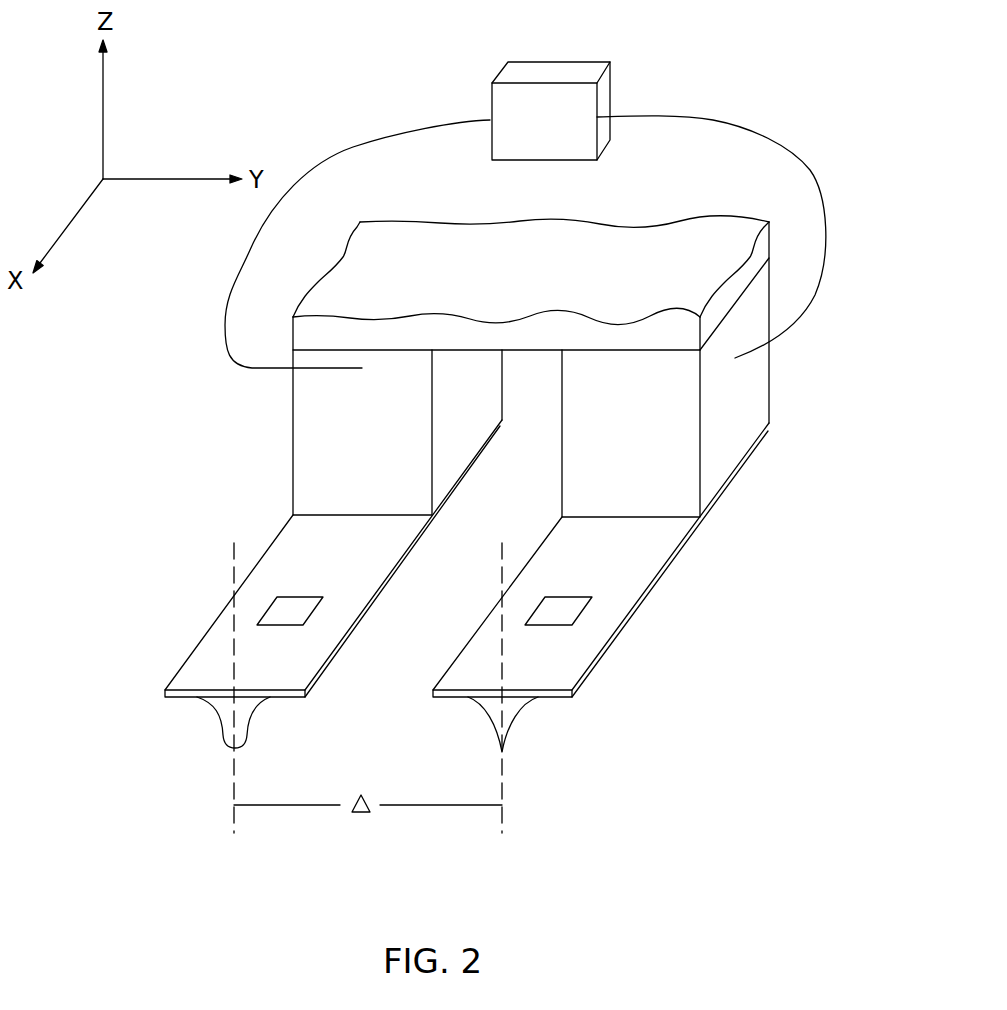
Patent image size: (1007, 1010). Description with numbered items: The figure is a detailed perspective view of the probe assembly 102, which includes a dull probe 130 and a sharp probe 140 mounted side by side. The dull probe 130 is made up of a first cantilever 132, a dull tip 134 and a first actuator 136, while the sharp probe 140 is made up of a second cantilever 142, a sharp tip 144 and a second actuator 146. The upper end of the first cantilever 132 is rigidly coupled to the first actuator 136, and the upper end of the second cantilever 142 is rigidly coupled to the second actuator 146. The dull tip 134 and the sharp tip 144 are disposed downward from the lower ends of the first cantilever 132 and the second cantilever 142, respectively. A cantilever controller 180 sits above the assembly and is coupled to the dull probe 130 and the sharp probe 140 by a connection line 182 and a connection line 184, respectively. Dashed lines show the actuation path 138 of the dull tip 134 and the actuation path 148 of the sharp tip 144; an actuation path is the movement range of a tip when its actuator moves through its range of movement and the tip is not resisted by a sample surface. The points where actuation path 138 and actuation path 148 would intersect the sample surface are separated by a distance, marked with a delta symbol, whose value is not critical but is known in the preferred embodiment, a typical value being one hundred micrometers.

The probe assembly 102 is at (794, 381).
The dull probe 130 is at (201, 608).
The first cantilever 132 is at (200, 655).
The dull tip 134 is at (227, 718).
The first actuator 136 is at (313, 437).
The actuation path 138 is at (232, 548).
The sharp probe 140 is at (655, 627).
The second cantilever 142 is at (572, 668).
The sharp tip 144 is at (508, 720).
The second actuator 146 is at (713, 440).
The actuation path 148 is at (500, 568).
The cantilever controller 180 is at (561, 131).
The connection line 182 is at (413, 128).
The connection line 184 is at (757, 99).